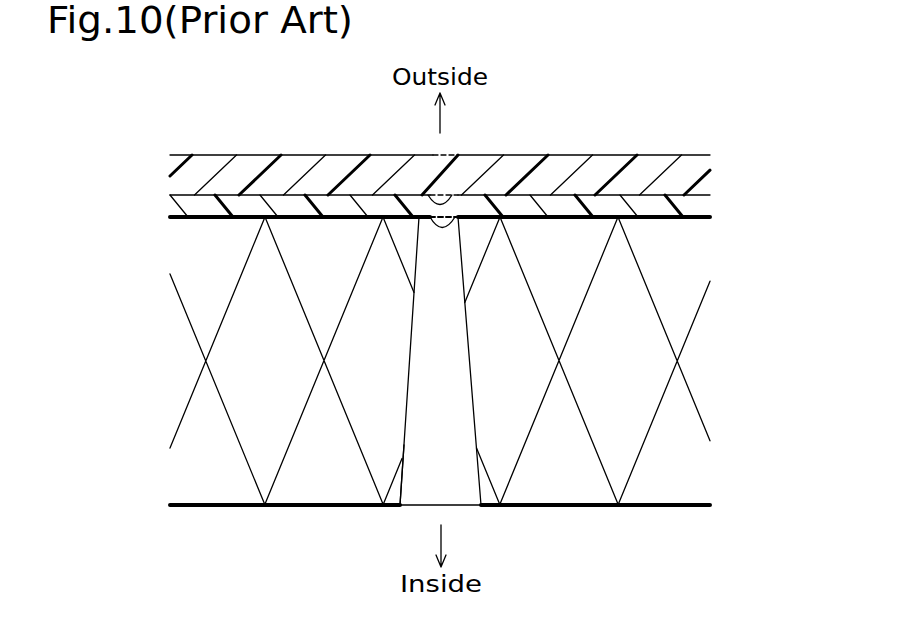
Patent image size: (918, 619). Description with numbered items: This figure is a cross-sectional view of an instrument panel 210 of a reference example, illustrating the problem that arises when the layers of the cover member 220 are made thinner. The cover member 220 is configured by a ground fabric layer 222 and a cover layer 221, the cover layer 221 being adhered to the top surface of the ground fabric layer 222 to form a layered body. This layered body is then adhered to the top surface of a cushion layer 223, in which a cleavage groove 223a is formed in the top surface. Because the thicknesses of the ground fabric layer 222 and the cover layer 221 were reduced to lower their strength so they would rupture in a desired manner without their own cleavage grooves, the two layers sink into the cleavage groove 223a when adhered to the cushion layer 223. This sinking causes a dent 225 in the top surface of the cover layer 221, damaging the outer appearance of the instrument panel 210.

The instrument panel 210 is at (677, 133).
The cover member 220 is at (158, 155).
The cover layer 221 is at (693, 166).
The ground fabric layer 222 is at (697, 204).
The cushion layer 223 is at (695, 364).
The cleavage groove 223a is at (405, 482).
The dent 225 is at (432, 157).